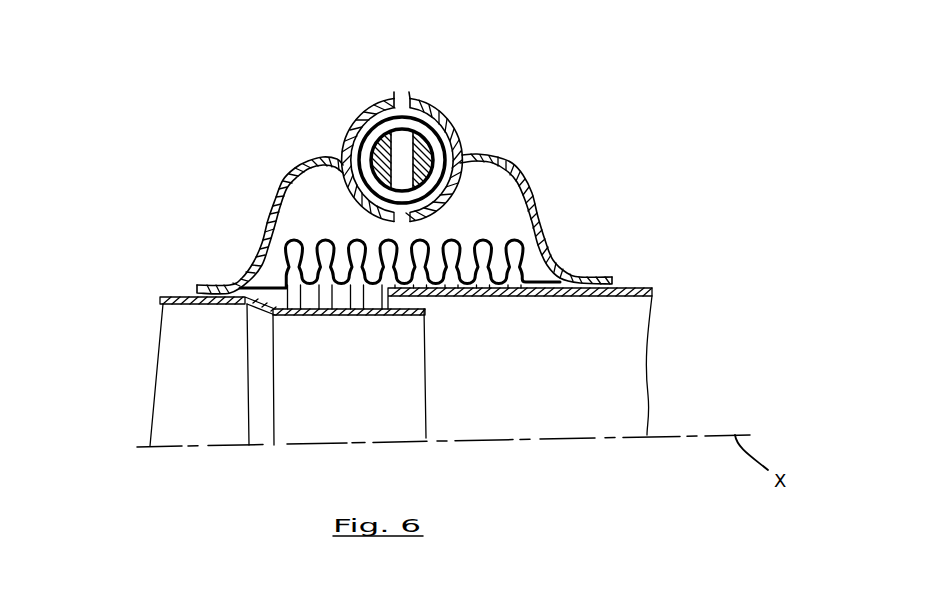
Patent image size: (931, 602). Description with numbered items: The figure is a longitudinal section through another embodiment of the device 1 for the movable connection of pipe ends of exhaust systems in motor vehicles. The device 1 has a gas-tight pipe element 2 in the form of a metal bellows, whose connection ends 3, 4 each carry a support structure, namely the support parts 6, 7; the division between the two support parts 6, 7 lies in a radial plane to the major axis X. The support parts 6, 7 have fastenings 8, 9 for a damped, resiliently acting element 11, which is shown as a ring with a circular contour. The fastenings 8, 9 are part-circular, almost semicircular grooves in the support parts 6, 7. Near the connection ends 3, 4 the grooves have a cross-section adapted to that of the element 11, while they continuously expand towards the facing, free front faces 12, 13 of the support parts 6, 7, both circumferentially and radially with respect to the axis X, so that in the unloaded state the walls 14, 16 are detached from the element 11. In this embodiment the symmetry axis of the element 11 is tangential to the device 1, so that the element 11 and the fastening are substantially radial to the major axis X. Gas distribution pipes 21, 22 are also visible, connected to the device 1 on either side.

The device 1 is at (176, 476).
The gas-tight pipe element 2 is at (528, 238).
The connection end 3 is at (193, 290).
The connection end 4 is at (610, 283).
The support part 6 is at (285, 172).
The support part 7 is at (525, 170).
The fastening 8 is at (358, 118).
The fastening 9 is at (432, 203).
The damped, resiliently acting element 11 is at (430, 132).
The free front face 12 is at (394, 92).
The free front face 13 is at (409, 92).
The wall 14 is at (417, 107).
The wall 16 is at (426, 172).
The gas distribution pipe 21 is at (195, 303).
The gas distribution pipe 22 is at (617, 297).